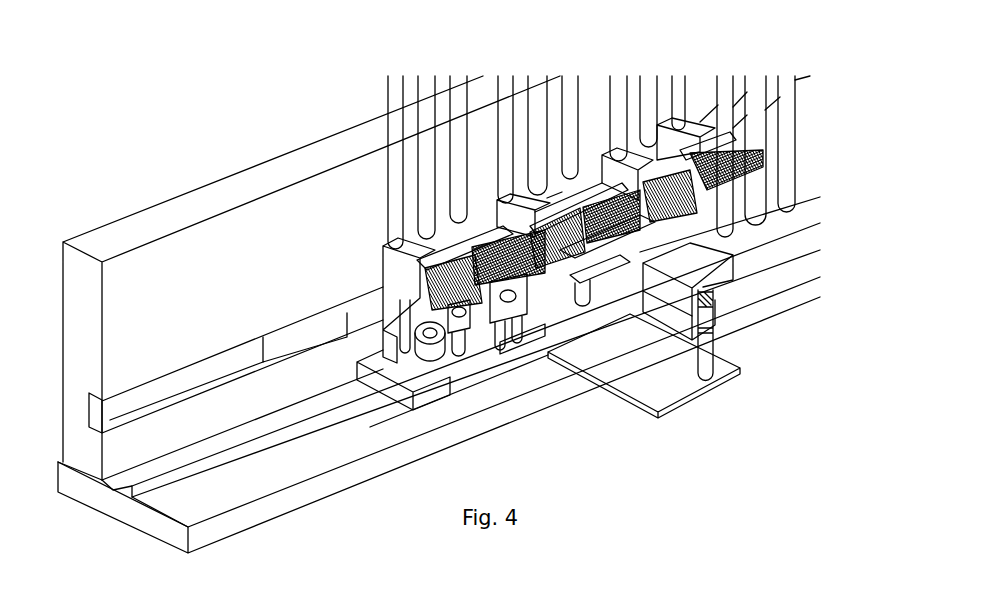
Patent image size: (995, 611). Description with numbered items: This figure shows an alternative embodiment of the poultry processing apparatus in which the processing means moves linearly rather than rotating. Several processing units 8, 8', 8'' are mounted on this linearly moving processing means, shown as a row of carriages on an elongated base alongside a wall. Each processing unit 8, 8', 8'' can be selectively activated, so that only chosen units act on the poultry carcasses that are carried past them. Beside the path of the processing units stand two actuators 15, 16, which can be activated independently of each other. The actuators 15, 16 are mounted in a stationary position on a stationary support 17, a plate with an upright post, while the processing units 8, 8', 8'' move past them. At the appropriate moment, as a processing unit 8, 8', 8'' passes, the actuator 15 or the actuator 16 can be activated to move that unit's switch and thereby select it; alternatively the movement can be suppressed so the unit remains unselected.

The processing unit 8 is at (403, 342).
The processing unit 8' is at (456, 362).
The processing unit 8'' is at (517, 332).
The actuator 15 is at (664, 332).
The actuator 16 is at (664, 298).
The stationary support 17 is at (614, 399).